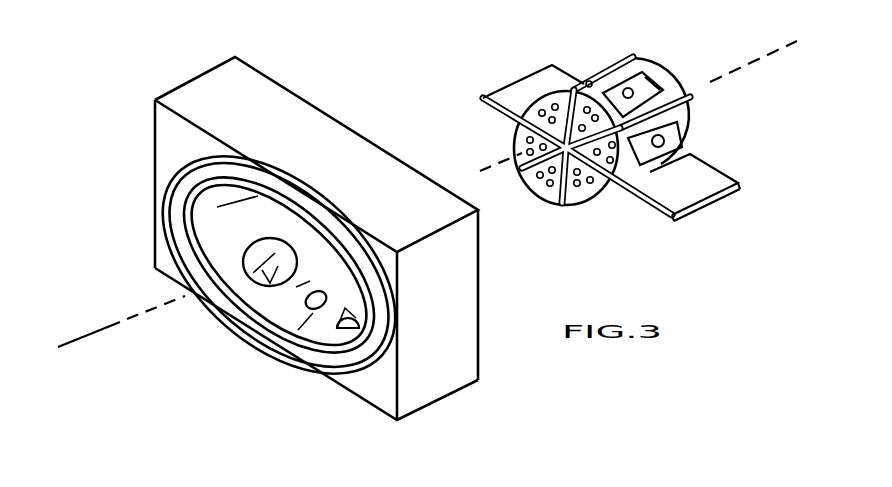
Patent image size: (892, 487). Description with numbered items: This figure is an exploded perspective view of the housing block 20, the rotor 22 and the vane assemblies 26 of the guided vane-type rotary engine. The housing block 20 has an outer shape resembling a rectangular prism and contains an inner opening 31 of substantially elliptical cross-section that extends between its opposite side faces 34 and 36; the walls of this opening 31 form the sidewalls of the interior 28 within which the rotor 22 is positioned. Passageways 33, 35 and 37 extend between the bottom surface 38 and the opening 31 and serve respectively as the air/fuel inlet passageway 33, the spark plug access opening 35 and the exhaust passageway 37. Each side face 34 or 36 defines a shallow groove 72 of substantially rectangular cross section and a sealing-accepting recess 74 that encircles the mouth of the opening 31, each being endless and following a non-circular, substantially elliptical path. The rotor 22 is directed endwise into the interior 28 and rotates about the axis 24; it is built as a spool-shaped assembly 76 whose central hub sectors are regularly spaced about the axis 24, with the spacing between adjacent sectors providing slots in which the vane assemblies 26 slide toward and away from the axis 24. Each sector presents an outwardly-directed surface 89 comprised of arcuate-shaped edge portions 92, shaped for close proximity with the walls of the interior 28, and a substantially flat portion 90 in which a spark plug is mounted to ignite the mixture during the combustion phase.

The housing block 20 is at (443, 323).
The rotor 22 is at (688, 80).
The axis 24 is at (110, 325).
The vane assemblies 26 is at (520, 78).
The interior 28 is at (193, 222).
The inner opening 31 is at (217, 207).
The air/fuel inlet passageway 33 is at (251, 279).
The side face 34 is at (173, 253).
The spark plug access opening 35 is at (305, 290).
The side face 36 is at (348, 129).
The exhaust passageway 37 is at (333, 318).
The bottom surface 38 is at (369, 409).
The shallow groove 72 is at (181, 161).
The sealing-accepting recess 74 is at (253, 273).
The spool-shaped assembly 76 is at (595, 202).
The outwardly-directed surface 89 is at (694, 84).
The substantially flat portions 90 is at (667, 73).
The arcuate-shaped edge portions 92 is at (589, 83).